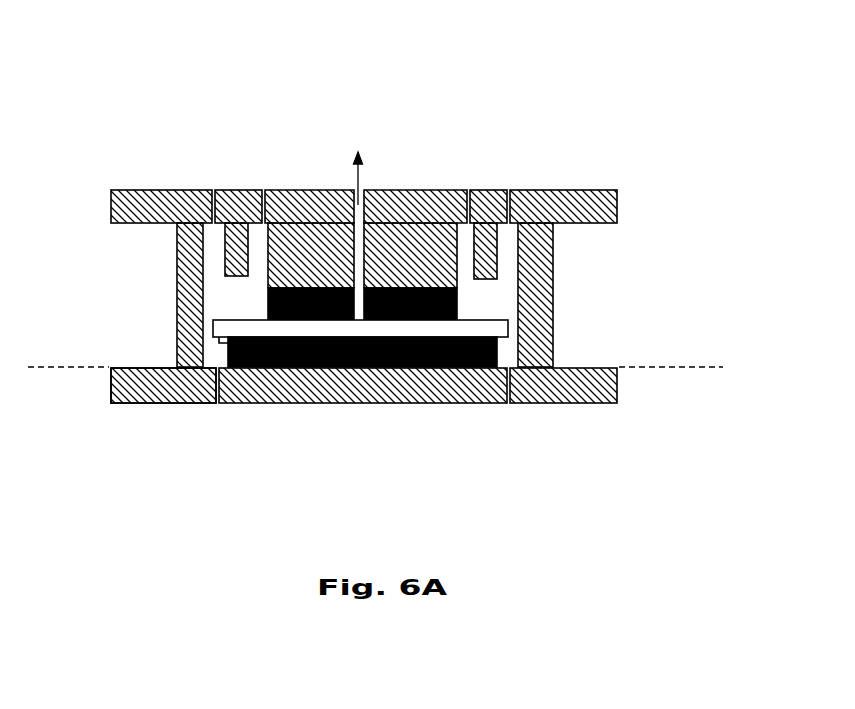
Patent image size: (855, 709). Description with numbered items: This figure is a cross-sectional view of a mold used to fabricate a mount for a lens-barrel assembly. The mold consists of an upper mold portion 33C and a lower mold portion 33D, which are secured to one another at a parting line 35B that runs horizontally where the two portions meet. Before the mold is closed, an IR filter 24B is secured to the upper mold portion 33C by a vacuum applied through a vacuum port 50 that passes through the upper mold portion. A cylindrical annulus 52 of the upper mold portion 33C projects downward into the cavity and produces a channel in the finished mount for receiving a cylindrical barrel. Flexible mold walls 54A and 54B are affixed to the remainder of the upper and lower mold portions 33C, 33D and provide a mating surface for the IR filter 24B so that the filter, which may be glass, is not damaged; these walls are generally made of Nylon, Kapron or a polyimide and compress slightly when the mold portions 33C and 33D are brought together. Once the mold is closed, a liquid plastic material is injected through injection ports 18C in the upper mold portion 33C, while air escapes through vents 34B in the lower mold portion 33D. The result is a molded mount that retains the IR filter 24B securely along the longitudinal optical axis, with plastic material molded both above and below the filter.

The injection ports 18C is at (253, 161).
The vacuum port 50 is at (380, 152).
The upper mold portion 33C is at (588, 154).
The lower mold portion 33D is at (608, 423).
The cylindrical annulus 52 is at (515, 259).
The flexible mold wall 54A is at (489, 301).
The flexible mold wall 54B is at (439, 385).
The IR filter 24B is at (204, 315).
The vents 34B is at (220, 427).
The parting line 35B is at (700, 351).